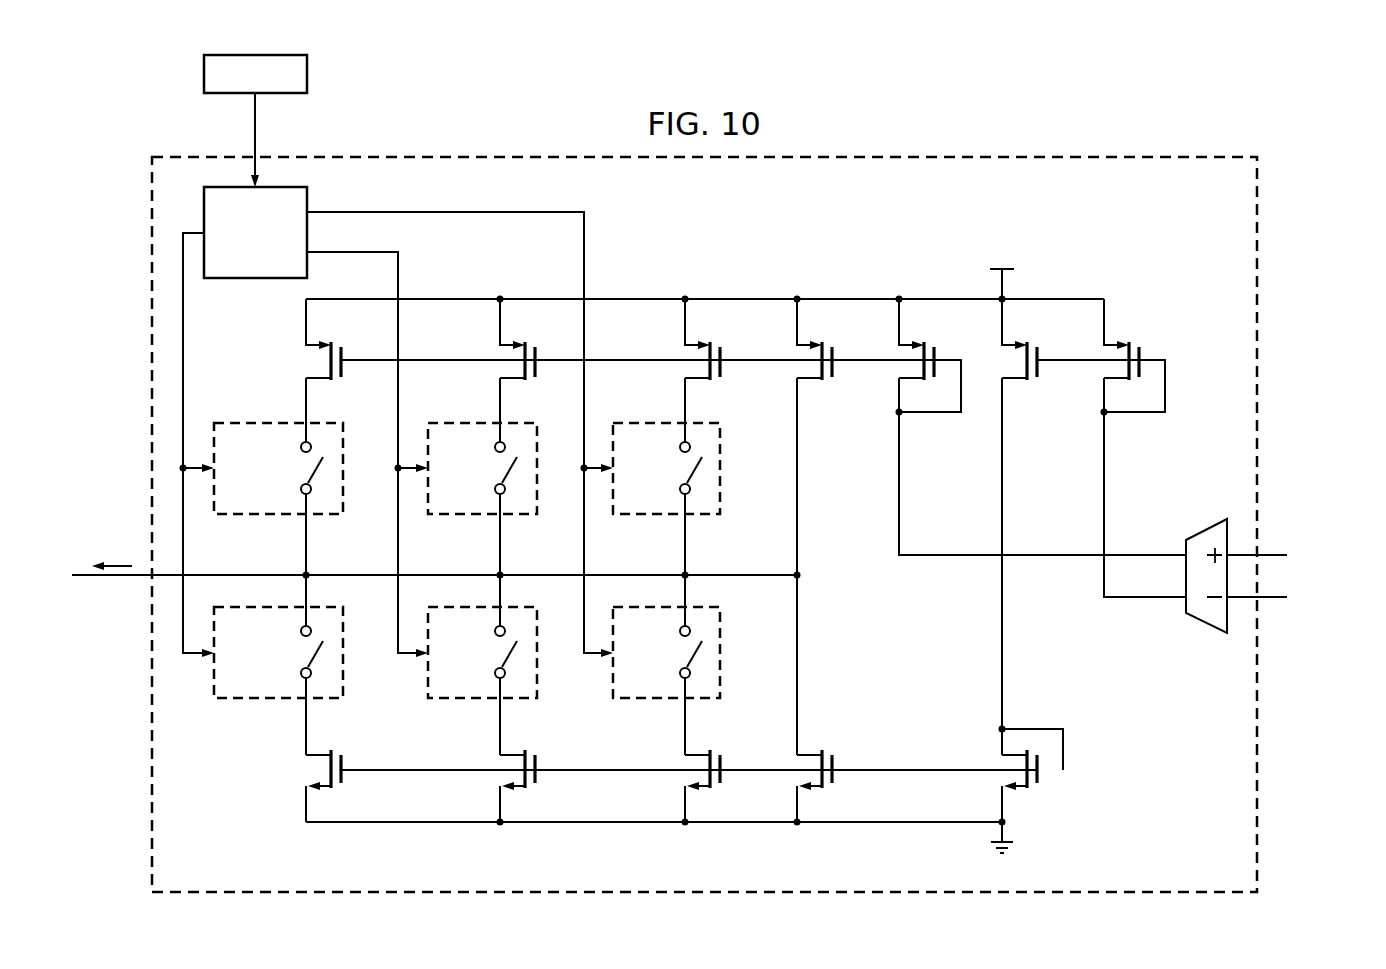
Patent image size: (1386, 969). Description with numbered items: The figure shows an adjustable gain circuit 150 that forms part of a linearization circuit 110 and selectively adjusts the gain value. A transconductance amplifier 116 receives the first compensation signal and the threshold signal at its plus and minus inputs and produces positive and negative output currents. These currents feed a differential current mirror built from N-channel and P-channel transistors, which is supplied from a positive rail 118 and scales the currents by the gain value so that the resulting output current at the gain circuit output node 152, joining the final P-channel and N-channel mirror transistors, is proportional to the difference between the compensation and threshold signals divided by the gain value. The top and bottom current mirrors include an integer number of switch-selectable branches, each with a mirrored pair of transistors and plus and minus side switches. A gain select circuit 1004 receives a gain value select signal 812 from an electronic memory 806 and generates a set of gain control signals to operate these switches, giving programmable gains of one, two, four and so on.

The linearization circuit 110 is at (1076, 108).
The electronic memory 806 is at (204, 73).
The gain value setting signal 812 is at (255, 127).
The gain circuit 150 is at (685, 237).
The gain select circuit 1004 is at (240, 282).
The supply rail 118 is at (847, 298).
The gain circuit output node 152 is at (367, 574).
The transconductance amplifier 116 is at (1205, 626).